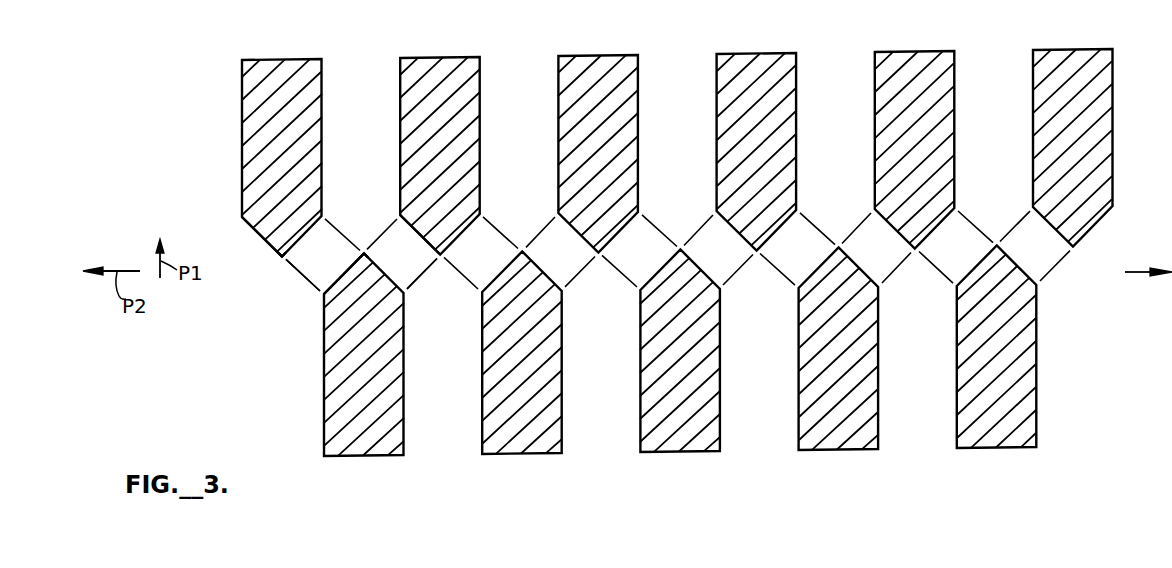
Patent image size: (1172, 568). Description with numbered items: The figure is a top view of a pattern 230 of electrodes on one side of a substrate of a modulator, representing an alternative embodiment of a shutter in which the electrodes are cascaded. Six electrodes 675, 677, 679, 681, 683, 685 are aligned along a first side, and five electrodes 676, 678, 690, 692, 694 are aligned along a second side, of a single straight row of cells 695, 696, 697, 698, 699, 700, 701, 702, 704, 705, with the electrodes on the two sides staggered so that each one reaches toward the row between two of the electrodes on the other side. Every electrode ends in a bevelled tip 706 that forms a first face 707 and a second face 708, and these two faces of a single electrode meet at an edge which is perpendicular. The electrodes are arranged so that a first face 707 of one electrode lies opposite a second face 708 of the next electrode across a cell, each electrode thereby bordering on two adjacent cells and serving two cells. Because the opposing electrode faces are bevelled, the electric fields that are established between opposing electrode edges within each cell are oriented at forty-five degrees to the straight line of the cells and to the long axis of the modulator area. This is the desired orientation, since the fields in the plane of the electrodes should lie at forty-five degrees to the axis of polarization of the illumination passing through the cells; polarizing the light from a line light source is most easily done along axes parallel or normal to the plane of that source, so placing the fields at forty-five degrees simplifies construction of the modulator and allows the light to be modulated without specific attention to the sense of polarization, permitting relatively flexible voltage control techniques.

The pattern 230 is at (464, 484).
The electrode 675 is at (279, 60).
The electrode 677 is at (437, 60).
The electrode 679 is at (595, 60).
The electrode 681 is at (753, 60).
The electrode 683 is at (911, 60).
The electrode 685 is at (1070, 60).
The electrode 676 is at (370, 457).
The electrode 678 is at (528, 457).
The electrode 690 is at (686, 457).
The electrode 692 is at (844, 457).
The electrode 694 is at (1002, 457).
The cell 695 is at (343, 266).
The cell 696 is at (422, 266).
The cell 697 is at (501, 266).
The cell 698 is at (540, 266).
The cell 699 is at (619, 266).
The cell 700 is at (698, 266).
The cell 701 is at (777, 266).
The cell 702 is at (856, 266).
The cell 704 is at (976, 266).
The cell 705 is at (1055, 266).
The bevelled tip 706 is at (290, 259).
The first face 707 is at (257, 236).
The second face 708 is at (296, 273).